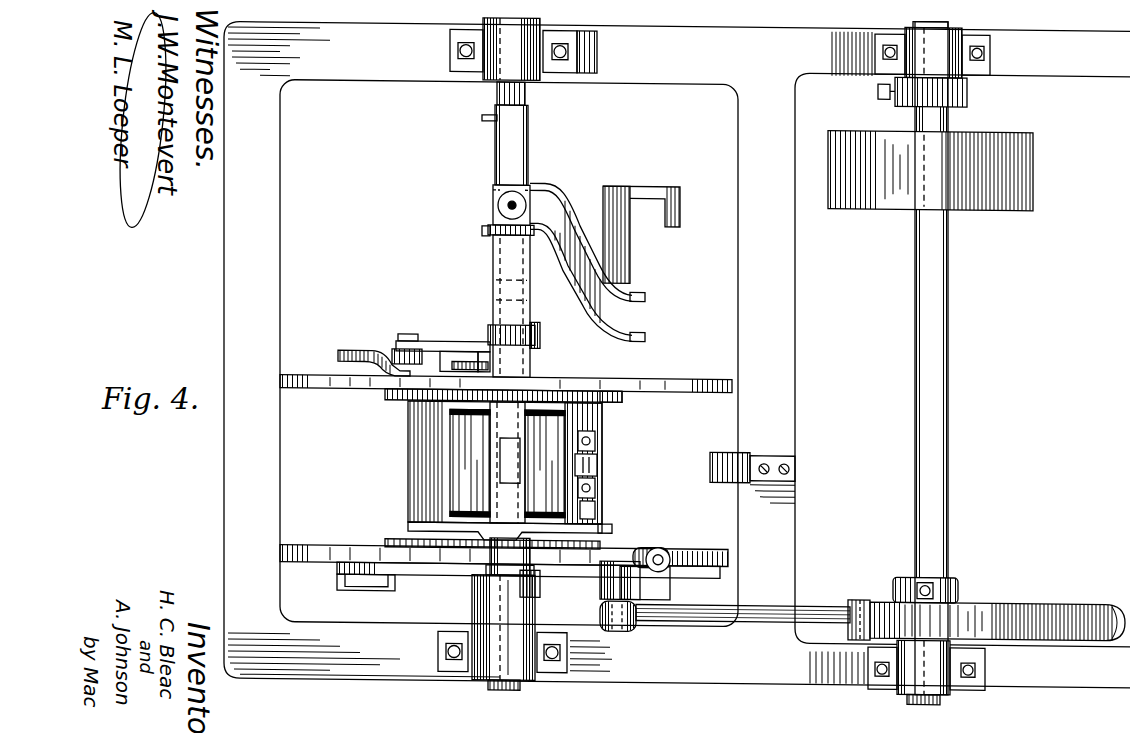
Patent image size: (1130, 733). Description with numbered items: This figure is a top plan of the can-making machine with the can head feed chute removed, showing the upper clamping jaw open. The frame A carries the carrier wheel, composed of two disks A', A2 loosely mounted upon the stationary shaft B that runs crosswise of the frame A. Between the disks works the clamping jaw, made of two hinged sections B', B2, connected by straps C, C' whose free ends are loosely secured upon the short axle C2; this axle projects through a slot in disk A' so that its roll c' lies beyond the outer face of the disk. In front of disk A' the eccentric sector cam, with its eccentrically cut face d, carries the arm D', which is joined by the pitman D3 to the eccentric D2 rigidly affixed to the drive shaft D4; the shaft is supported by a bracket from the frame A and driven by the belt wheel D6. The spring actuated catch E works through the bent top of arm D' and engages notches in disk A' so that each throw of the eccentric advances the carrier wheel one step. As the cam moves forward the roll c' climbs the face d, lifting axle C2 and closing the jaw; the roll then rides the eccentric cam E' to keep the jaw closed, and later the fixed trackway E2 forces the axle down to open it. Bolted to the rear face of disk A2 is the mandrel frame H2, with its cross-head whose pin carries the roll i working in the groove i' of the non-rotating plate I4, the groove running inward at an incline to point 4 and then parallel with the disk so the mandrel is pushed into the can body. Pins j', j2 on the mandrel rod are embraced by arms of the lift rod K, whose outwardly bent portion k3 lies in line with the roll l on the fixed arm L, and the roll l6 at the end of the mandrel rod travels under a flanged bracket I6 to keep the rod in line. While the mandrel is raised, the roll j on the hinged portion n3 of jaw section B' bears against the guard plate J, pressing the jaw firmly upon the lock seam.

The frame A is at (677, 354).
The disk A' is at (504, 540).
The disk A2 is at (688, 378).
The stationary shaft B is at (517, 374).
The jaw section B' is at (606, 464).
The jaw section B2 is at (422, 466).
The strap C is at (529, 524).
The strap C' is at (486, 530).
The short axle C2 is at (500, 552).
The roll c' is at (489, 596).
The arm D' is at (580, 581).
The eccentric D2 is at (1002, 598).
The pitman D3 is at (800, 606).
The drive shaft D4 is at (950, 500).
The belt wheel D6 is at (1000, 207).
The eccentrically cut face d is at (630, 628).
The spring actuated catch E is at (664, 533).
The eccentric cam E' is at (528, 581).
The fixed trackway E2 is at (338, 578).
The mandrel frame H2 is at (532, 307).
The circular plate I4 is at (630, 250).
The hook I6 is at (682, 213).
The roll i is at (496, 205).
The groove i' is at (587, 262).
The guard plate J is at (726, 452).
The roll j is at (603, 465).
The pin j' is at (469, 130).
The pin j2 is at (485, 238).
The lift rod K is at (428, 374).
The outwardly bent portion k3 is at (346, 353).
The fixed arm L is at (432, 342).
The roll l is at (392, 352).
The roll l6 is at (497, 96).
The hinged portion n3 is at (600, 507).
The point 4 is at (637, 346).